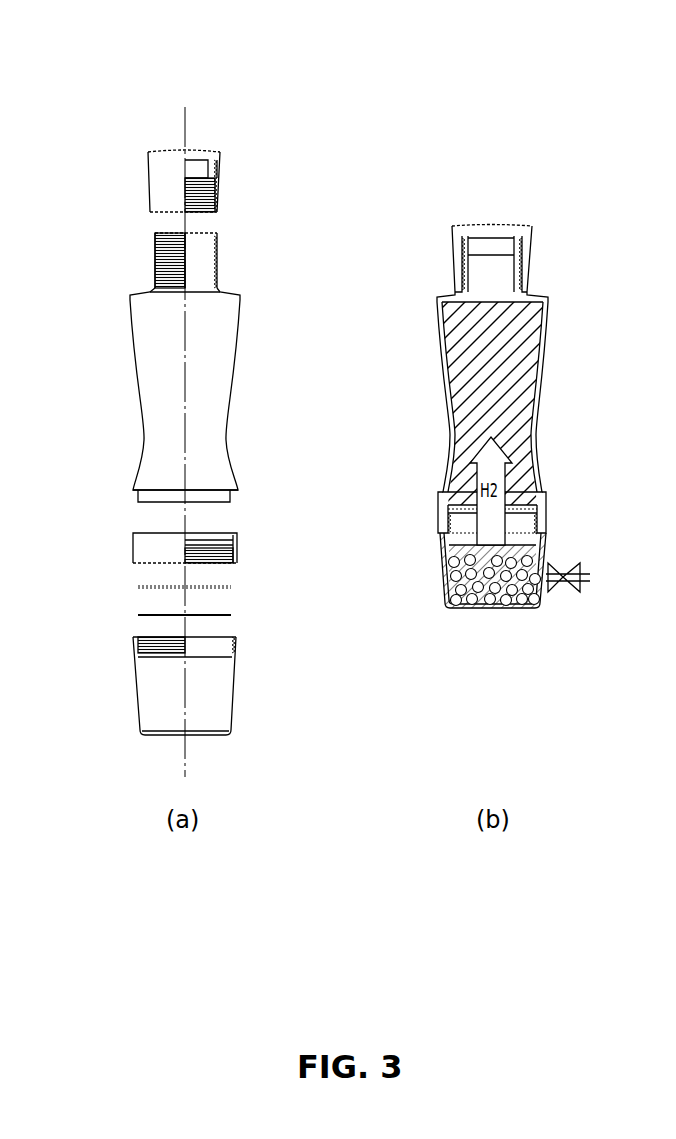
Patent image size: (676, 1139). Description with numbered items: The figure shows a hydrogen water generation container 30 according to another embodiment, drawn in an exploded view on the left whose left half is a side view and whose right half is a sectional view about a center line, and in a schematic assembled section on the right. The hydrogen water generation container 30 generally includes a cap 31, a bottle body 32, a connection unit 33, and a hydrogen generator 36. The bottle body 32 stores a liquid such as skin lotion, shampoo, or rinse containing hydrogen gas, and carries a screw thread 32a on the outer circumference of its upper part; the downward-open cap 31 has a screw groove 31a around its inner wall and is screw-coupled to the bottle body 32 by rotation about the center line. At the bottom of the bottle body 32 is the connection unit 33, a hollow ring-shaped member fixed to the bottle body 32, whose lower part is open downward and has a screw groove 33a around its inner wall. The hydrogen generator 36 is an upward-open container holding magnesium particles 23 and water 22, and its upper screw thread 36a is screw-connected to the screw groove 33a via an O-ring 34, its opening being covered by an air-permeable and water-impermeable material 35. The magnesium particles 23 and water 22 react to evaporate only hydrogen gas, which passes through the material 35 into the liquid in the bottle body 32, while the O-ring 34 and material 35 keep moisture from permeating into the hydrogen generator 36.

The hydrogen water generation container 30 is at (252, 87).
The cap 31 is at (223, 157).
The screw groove 31a is at (216, 198).
The bottle body 32 is at (238, 362).
The screw thread 32a is at (219, 255).
The connection unit 33 is at (238, 548).
The screw groove 33a is at (237, 558).
The O-ring 34 is at (138, 583).
The air-permeable and water-impermeable material 35 is at (138, 612).
The hydrogen generator 36 is at (158, 695).
The cup thread 36a is at (137, 640).
The water 22 is at (510, 553).
The magnesium particles 23 is at (483, 580).